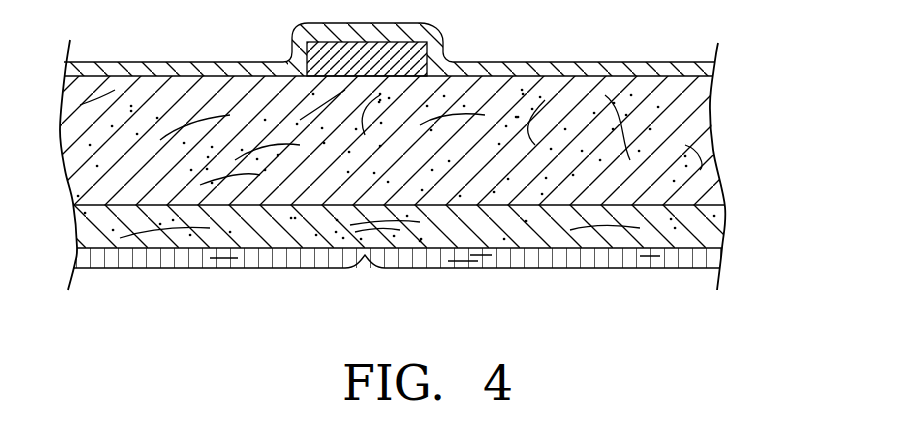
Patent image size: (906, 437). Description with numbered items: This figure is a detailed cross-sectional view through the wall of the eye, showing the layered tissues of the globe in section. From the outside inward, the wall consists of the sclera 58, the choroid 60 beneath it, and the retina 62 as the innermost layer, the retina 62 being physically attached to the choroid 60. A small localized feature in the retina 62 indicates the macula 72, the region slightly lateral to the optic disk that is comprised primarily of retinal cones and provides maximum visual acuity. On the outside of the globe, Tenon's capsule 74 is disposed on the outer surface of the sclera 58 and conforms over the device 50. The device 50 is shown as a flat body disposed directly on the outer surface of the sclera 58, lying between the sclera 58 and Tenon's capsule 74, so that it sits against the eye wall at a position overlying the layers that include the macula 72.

The device 50 is at (431, 56).
The sclera 58 is at (703, 134).
The choroid 60 is at (711, 222).
The retina 62 is at (720, 268).
The macula 72 is at (366, 262).
The Tenon's capsule 74 is at (718, 69).